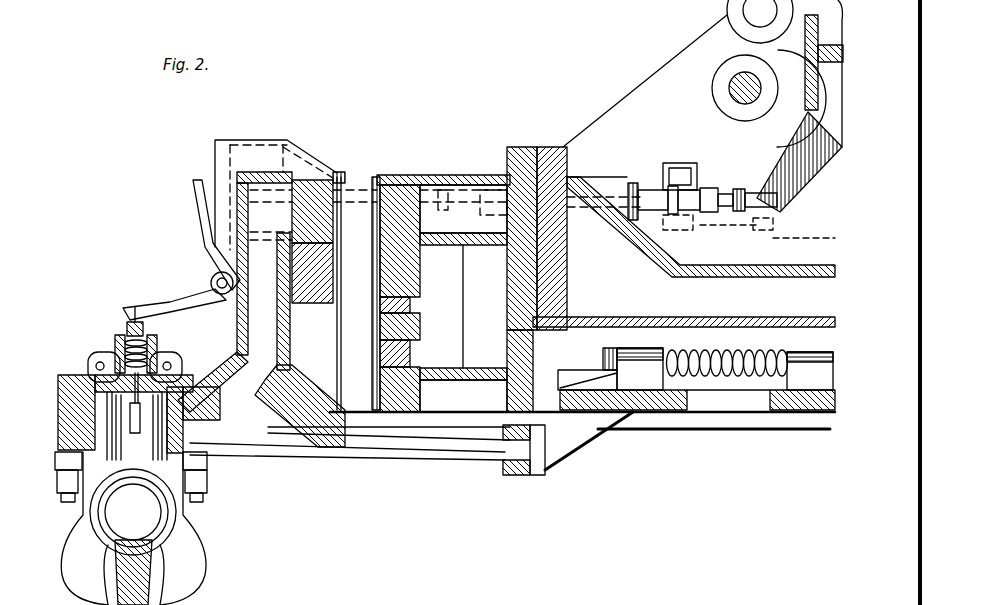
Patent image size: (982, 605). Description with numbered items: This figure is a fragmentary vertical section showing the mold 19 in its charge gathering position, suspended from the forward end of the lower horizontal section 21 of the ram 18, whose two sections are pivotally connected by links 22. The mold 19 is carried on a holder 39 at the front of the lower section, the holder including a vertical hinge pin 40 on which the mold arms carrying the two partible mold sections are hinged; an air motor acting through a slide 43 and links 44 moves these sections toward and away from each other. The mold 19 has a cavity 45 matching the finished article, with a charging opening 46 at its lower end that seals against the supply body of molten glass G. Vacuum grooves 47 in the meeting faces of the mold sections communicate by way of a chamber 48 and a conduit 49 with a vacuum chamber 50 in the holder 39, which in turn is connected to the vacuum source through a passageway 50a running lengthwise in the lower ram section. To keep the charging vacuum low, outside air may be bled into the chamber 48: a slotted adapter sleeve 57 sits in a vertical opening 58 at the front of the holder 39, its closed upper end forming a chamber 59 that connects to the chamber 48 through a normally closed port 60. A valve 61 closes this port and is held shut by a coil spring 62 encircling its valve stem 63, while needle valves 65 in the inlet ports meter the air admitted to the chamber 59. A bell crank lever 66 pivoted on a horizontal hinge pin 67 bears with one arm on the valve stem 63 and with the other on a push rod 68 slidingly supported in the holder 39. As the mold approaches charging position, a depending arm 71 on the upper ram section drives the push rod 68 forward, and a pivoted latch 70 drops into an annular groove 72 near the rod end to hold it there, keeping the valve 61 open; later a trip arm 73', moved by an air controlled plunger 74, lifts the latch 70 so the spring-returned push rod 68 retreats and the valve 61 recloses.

The ram 18 is at (688, 125).
The mold 19 is at (193, 530).
The lower horizontal section 21 is at (692, 433).
The links 22 is at (733, 60).
The holder 39 is at (473, 164).
The vertical hinge pin 40 is at (365, 410).
The slide 43 is at (813, 408).
The links 44 is at (465, 453).
The cavity 45 is at (157, 515).
The charging opening 46 is at (177, 600).
The vacuum grooves 47 is at (153, 553).
The chamber 48 is at (137, 426).
The conduit 49 is at (261, 293).
The vacuum chamber 50 is at (465, 220).
The passageway 50a is at (720, 293).
The slotted adapter sleeve 57 is at (150, 452).
The vertical opening 58 is at (178, 372).
The chamber 59 is at (125, 350).
The port 60 is at (143, 420).
The valve 61 is at (152, 398).
The coil spring 62 is at (130, 328).
The valve stem 63 is at (143, 321).
The needle valves 65 is at (155, 360).
The bell crank lever 66 is at (207, 292).
The horizontal hinge pin 67 is at (220, 294).
The push rod 68 is at (207, 190).
The pivoted latch 70 is at (680, 168).
The depending arm 71 is at (787, 165).
The annular groove 72 is at (702, 192).
The trip arm 73' is at (687, 234).
The air controlled plunger 74 is at (760, 226).
The supply body of molten glass G is at (203, 603).